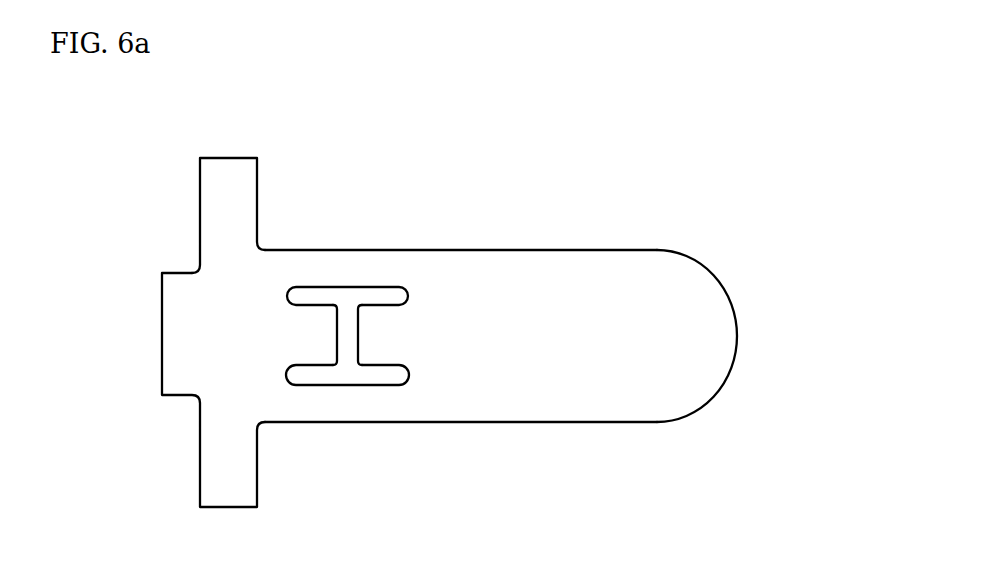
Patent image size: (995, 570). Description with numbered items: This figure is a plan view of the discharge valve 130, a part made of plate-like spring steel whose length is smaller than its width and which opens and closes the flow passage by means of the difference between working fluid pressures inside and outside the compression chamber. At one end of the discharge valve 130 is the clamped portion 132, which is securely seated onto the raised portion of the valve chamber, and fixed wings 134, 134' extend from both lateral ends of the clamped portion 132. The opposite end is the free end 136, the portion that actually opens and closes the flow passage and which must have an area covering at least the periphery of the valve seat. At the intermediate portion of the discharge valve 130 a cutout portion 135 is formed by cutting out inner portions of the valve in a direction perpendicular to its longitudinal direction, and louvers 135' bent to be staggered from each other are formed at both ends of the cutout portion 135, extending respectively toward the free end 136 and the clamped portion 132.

The discharge valve 130 is at (424, 322).
The clamped portion 132 is at (192, 377).
The fixed wing 134 is at (278, 215).
The fixed wing 134' is at (293, 455).
The cutout portion 135 is at (381, 280).
The louvers 135' is at (393, 290).
The free end 136 is at (667, 310).